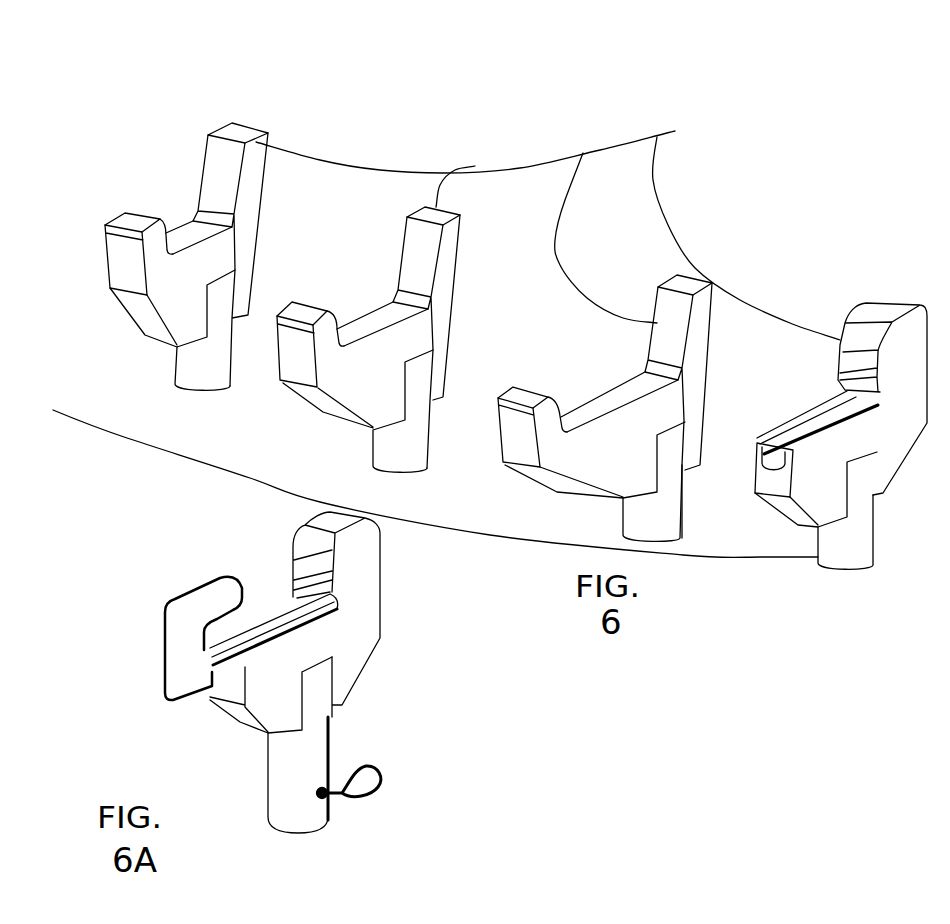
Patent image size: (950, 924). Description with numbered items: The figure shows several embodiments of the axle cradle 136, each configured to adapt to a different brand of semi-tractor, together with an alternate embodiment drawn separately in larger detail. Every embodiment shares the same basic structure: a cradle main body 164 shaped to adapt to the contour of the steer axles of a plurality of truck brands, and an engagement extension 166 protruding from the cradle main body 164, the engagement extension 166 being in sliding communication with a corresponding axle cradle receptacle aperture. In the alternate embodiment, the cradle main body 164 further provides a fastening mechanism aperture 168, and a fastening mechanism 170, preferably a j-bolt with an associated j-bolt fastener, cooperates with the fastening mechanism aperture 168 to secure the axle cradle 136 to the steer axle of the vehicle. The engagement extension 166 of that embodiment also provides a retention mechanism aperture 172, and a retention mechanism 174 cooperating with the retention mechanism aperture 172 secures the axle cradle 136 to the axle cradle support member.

In FIG. 6, the axle cradle 136 is at (576, 58).
In FIG. 6A, the axle cradle 136 is at (210, 540).
In FIG. 6, the cradle main body 164 is at (516, 327).
In FIG. 6A, the cradle main body 164 is at (366, 568).
In FIG. 6, the engagement extension 166 is at (627, 513).
In FIG. 6A, the engagement extension 166 is at (278, 755).
In FIG. 6, the fastening mechanism aperture 168 is at (817, 422).
In FIG. 6A, the fastening mechanism aperture 168 is at (290, 604).
In FIG. 6, the fastening mechanism 170 is at (774, 470).
In FIG. 6A, the fastening mechanism 170 is at (193, 607).
In FIG. 6A, the retention mechanism aperture 172 is at (308, 787).
In FIG. 6A, the retention mechanism 174 is at (377, 763).